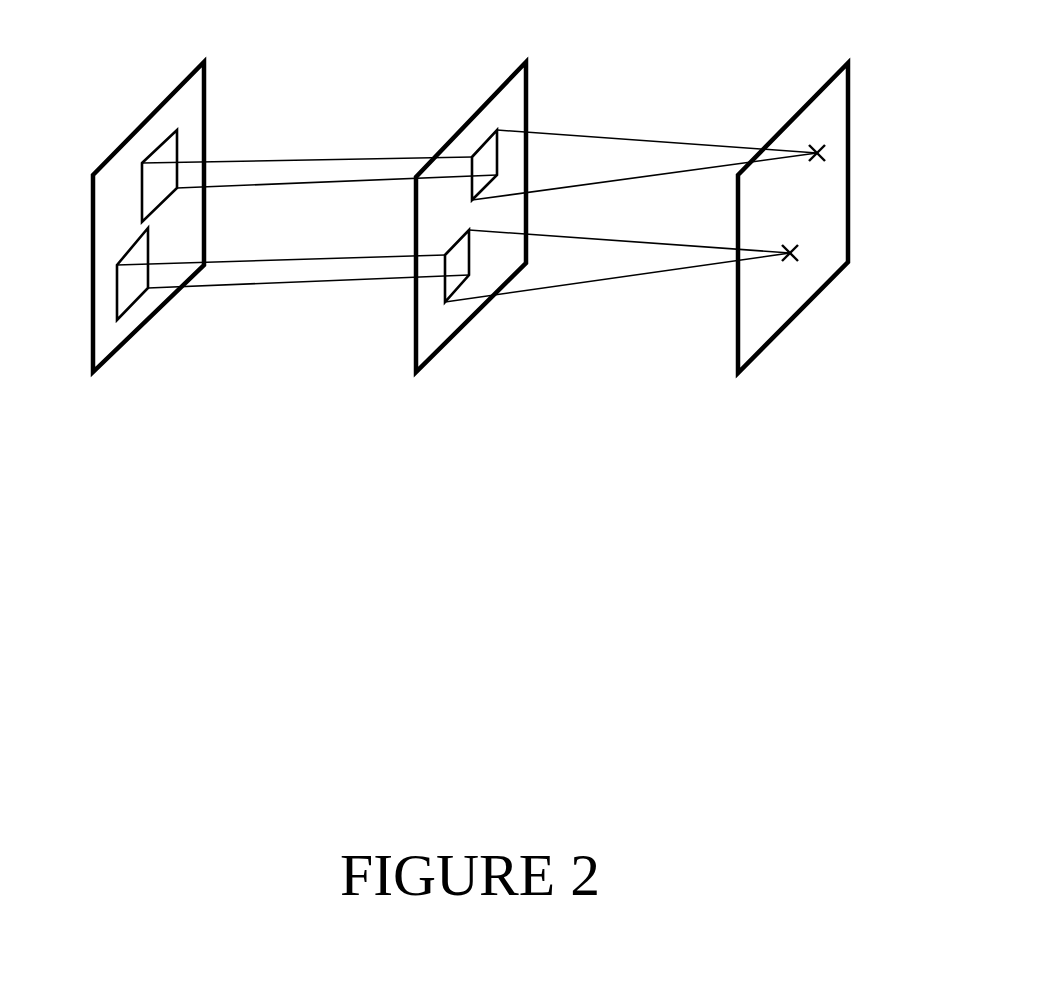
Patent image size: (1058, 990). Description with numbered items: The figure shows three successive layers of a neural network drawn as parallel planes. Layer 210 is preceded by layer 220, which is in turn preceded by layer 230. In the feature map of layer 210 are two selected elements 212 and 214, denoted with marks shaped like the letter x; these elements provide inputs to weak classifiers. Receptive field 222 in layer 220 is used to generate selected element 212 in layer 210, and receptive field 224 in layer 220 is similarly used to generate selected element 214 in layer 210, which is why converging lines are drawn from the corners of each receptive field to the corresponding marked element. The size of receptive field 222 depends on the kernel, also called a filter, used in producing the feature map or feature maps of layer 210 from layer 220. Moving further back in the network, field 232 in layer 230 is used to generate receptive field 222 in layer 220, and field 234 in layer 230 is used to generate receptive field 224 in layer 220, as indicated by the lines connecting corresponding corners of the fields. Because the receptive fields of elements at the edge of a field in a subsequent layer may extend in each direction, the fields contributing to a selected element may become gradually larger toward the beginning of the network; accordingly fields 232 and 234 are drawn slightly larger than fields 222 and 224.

The layer 210 is at (762, 352).
The selected element 212 is at (800, 253).
The selected element 214 is at (825, 150).
The layer 220 is at (447, 343).
The receptive field 222 is at (446, 301).
The receptive field 224 is at (483, 143).
The layer 230 is at (127, 342).
The field 232 is at (116, 297).
The field 234 is at (160, 145).